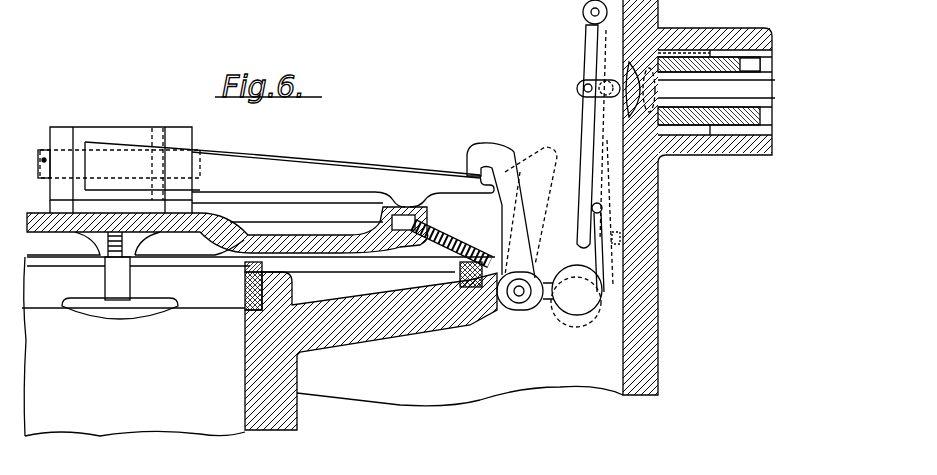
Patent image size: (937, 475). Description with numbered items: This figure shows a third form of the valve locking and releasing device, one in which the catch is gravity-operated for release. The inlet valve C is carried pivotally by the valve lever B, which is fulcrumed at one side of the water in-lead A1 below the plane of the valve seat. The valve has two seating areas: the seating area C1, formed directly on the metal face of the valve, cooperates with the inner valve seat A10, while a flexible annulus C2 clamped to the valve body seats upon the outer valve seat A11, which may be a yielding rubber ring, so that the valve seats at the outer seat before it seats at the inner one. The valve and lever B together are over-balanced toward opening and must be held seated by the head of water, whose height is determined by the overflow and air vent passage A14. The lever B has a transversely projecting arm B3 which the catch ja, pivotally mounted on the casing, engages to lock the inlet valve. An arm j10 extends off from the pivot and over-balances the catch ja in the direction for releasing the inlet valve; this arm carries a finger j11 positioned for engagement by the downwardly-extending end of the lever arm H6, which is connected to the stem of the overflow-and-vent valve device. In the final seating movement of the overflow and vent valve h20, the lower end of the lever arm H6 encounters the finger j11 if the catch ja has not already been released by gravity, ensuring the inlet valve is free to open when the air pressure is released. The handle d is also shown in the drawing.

The valve lever B is at (109, 145).
The transversely projecting arm B3 is at (308, 172).
The inlet valve C is at (328, 260).
The seating area C1 is at (250, 268).
The flexible annulus C2 is at (462, 257).
The water in-lead A1 is at (268, 388).
The inner valve seat A10 is at (243, 302).
The outer valve seat A11 is at (462, 322).
The overflow and air vent passage A14 is at (686, 130).
The handle nut d is at (120, 329).
The catch ja is at (505, 210).
The arm j10 is at (535, 310).
The finger j11 is at (600, 210).
The lever arm H6 is at (584, 118).
The overflow and vent valve h20 is at (628, 75).